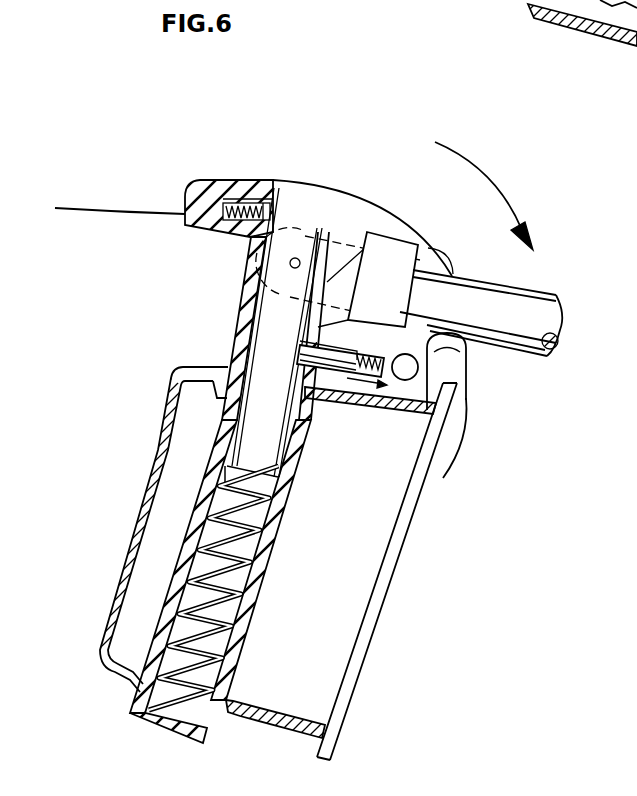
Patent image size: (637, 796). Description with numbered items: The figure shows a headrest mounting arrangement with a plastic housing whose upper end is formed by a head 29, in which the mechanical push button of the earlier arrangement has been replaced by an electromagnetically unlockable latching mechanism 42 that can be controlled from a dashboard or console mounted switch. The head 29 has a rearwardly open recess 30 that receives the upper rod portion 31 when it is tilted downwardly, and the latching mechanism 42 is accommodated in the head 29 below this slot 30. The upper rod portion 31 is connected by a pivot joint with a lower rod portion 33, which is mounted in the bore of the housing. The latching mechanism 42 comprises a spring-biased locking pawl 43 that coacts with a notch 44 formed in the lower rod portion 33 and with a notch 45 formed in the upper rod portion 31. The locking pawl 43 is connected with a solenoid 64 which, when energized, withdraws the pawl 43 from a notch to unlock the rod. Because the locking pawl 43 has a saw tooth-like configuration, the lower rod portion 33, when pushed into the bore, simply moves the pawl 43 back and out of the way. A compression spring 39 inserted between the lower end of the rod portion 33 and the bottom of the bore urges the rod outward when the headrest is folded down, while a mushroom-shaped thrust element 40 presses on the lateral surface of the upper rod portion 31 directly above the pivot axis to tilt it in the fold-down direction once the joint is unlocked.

The head 29 is at (212, 188).
The recess 30 is at (342, 200).
The upper rod portion 31 is at (518, 335).
The lower rod portion 33 is at (258, 334).
The compression spring 39 is at (233, 623).
The mushroom-shaped thrust element 40 is at (277, 207).
The latching mechanism 42 is at (395, 346).
The locking pawl 43 is at (338, 357).
The notch 44 is at (297, 360).
The notch 45 is at (432, 323).
The solenoid 64 is at (405, 380).